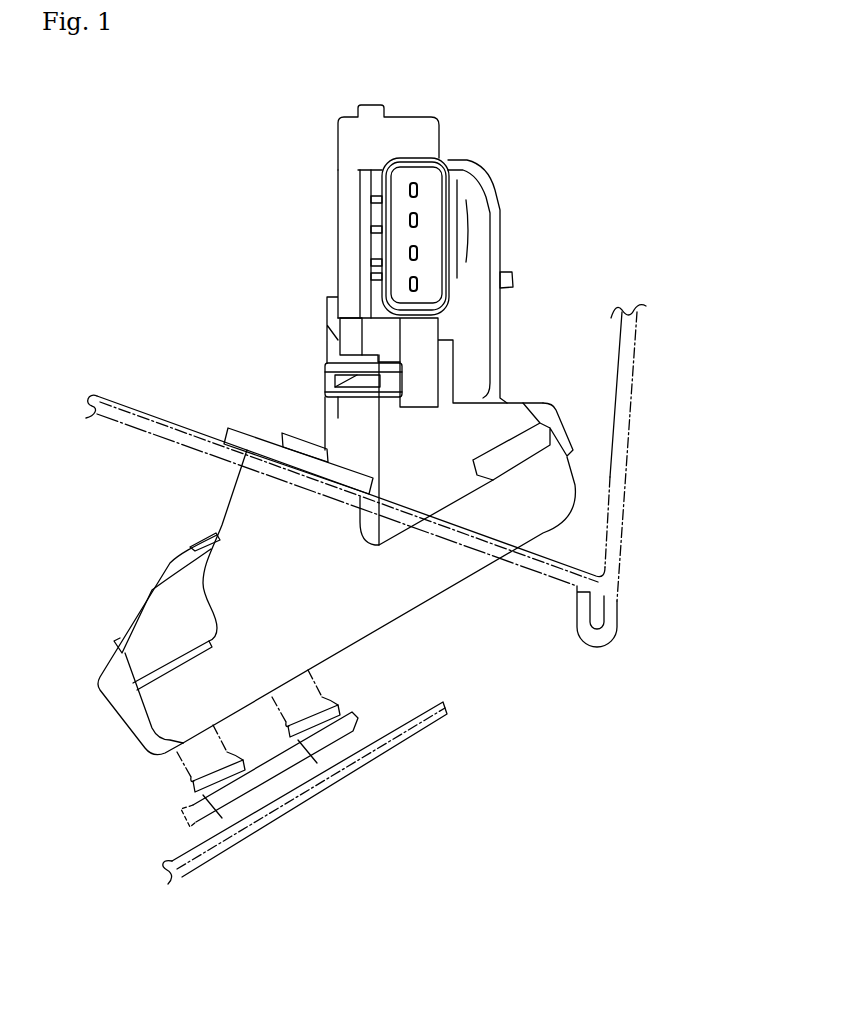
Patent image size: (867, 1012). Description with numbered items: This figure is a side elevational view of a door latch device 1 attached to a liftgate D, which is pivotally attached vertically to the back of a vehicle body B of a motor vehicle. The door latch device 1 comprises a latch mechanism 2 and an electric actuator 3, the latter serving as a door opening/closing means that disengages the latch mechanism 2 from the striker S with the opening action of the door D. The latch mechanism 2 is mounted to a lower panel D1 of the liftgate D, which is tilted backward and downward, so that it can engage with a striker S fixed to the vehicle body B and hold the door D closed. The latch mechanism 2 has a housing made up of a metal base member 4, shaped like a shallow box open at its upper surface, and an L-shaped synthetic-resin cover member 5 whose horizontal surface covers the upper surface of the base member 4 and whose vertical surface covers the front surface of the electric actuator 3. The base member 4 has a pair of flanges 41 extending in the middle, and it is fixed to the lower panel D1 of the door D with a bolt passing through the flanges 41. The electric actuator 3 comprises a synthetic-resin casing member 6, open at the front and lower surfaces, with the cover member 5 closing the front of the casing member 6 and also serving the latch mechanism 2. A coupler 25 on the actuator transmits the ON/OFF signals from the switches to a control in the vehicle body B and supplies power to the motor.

The door latch device 1 is at (568, 188).
The latch mechanism 2 is at (114, 716).
The electric actuator 3 is at (512, 235).
The base member 4 is at (464, 578).
The cover member 5 is at (338, 152).
The casing member 6 is at (442, 137).
The coupler 25 is at (446, 158).
The flange 41 is at (228, 427).
The liftgate D is at (642, 391).
The lower panel D1 is at (149, 403).
The striker S is at (175, 772).
The vehicle body B is at (433, 700).